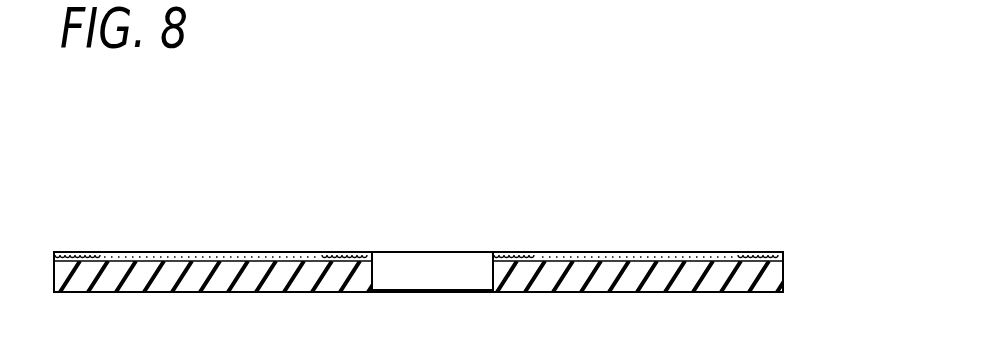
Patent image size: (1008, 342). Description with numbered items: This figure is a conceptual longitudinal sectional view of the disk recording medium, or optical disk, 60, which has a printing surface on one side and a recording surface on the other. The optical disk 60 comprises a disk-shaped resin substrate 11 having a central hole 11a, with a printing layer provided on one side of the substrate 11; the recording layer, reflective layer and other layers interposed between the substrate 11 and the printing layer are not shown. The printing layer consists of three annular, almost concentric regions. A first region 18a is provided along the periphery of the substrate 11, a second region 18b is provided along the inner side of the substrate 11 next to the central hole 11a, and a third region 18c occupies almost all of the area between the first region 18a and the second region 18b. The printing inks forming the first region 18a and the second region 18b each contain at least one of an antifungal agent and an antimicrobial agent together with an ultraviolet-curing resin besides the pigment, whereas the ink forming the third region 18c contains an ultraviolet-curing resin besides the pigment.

The substrate 11 is at (783, 272).
The central hole 11a is at (437, 262).
The first region 18a is at (82, 252).
The second region 18b is at (345, 252).
The third region 18c is at (212, 252).
The disk recording medium 60 is at (693, 162).